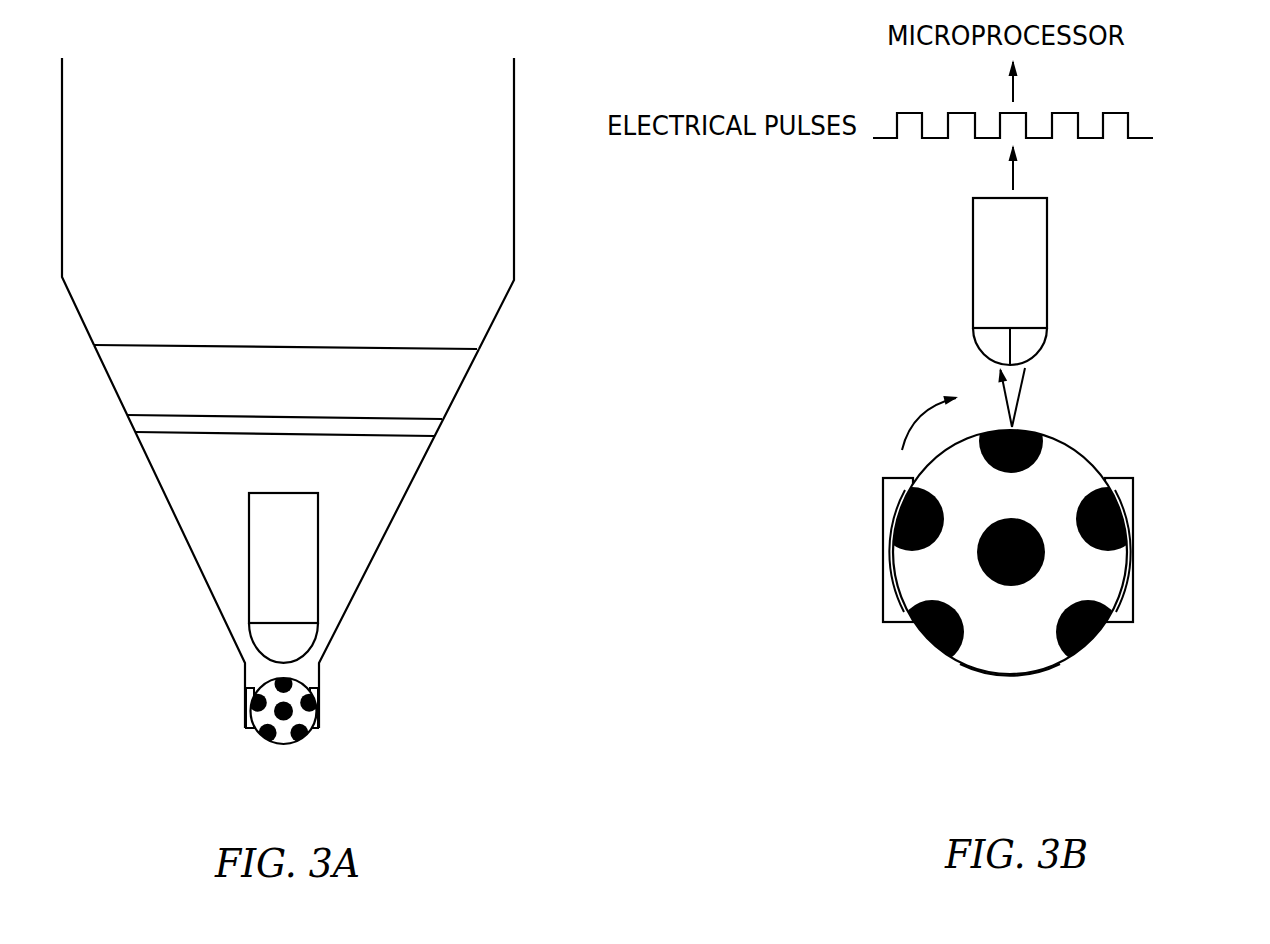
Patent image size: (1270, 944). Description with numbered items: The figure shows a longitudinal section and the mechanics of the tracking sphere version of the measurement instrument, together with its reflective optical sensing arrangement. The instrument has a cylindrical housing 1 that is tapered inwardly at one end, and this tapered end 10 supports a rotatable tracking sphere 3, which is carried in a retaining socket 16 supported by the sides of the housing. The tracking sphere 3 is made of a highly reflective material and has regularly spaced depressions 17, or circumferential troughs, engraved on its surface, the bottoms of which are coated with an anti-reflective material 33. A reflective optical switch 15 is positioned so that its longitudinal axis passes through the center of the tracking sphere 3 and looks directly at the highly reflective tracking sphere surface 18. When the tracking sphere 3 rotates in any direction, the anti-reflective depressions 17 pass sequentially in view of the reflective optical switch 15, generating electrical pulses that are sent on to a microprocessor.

In FIG. 3A, the cylindrical housing 1 is at (520, 258).
In FIG. 3A, the tracking sphere 3 is at (314, 752).
In FIG. 3B, the tracking sphere 3 is at (976, 610).
In FIG. 3A, the tapered end 10 is at (355, 620).
In FIG. 3A, the reflective optical switch 15 is at (329, 567).
In FIG. 3B, the reflective optical switch 15 is at (961, 248).
In FIG. 3A, the retaining socket 16 is at (325, 711).
In FIG. 3B, the retaining socket 16 is at (1144, 553).
In FIG. 3B, the depressions 17 is at (925, 645).
In FIG. 3B, the tracking sphere surface 18 is at (1009, 684).
In FIG. 3B, the anti-reflective material 33 is at (1088, 647).